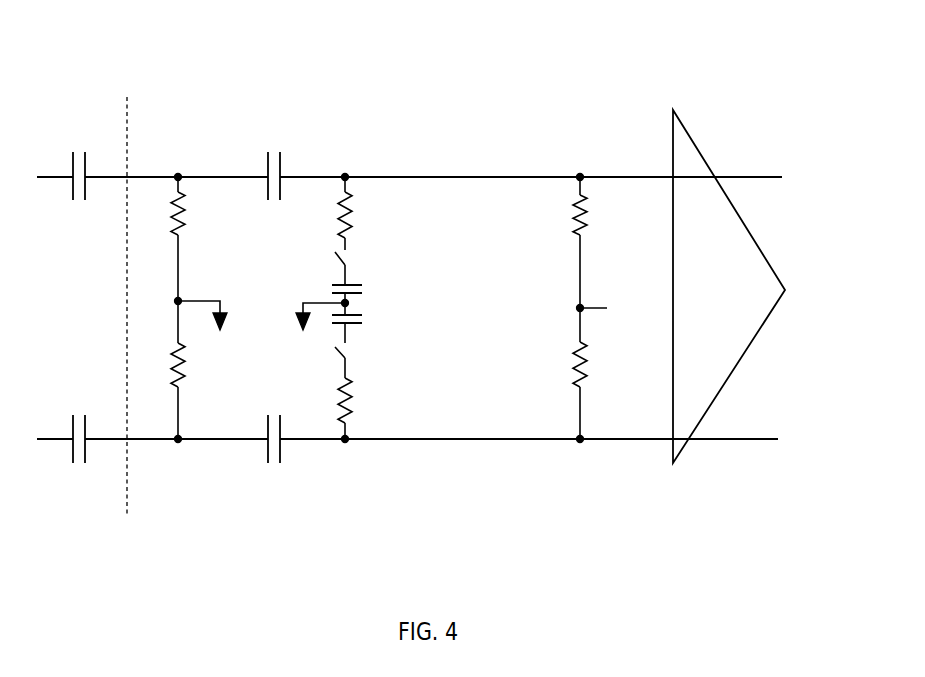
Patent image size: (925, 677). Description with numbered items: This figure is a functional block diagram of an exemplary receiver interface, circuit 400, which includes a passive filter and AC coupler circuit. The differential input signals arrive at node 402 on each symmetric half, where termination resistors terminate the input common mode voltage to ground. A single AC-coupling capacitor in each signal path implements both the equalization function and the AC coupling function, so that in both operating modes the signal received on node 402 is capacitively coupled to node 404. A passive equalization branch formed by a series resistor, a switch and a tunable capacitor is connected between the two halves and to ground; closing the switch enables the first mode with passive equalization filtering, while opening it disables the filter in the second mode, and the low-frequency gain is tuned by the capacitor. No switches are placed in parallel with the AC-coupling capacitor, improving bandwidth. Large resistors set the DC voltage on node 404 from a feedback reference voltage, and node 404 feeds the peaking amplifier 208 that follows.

The circuit 400 is at (121, 67).
The node 402 is at (203, 177).
The node 404 is at (527, 177).
The peaking amplifier 208 is at (762, 303).